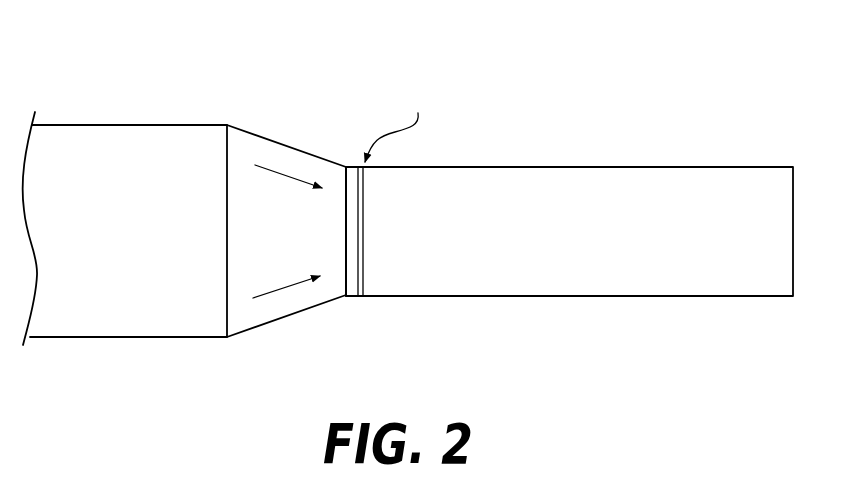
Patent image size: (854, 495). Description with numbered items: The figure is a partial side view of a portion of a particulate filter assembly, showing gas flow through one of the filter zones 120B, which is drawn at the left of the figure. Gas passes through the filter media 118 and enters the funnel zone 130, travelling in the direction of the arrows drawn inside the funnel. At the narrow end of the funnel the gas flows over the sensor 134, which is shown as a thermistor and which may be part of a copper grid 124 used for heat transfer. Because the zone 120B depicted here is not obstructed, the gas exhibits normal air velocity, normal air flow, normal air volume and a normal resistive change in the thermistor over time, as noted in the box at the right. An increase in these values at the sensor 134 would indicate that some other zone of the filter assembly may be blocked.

The zone 120B is at (81, 125).
The filter media 118 is at (143, 247).
The funnel zone 130 is at (262, 137).
The copper grid 124 is at (363, 166).
The sensor 134 is at (358, 296).